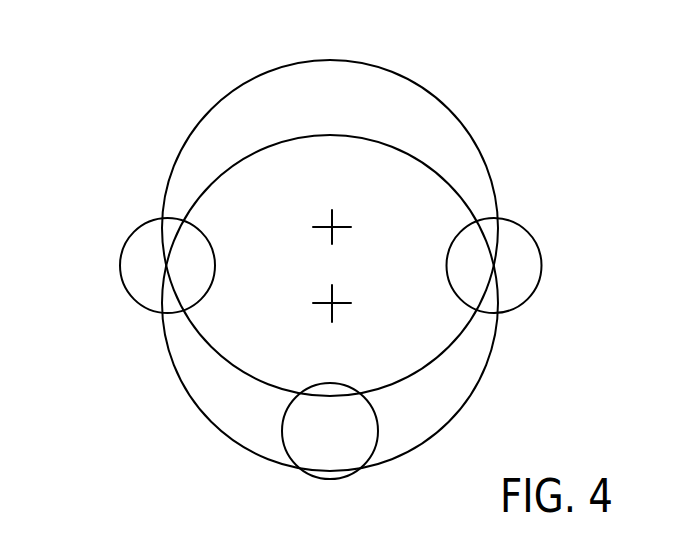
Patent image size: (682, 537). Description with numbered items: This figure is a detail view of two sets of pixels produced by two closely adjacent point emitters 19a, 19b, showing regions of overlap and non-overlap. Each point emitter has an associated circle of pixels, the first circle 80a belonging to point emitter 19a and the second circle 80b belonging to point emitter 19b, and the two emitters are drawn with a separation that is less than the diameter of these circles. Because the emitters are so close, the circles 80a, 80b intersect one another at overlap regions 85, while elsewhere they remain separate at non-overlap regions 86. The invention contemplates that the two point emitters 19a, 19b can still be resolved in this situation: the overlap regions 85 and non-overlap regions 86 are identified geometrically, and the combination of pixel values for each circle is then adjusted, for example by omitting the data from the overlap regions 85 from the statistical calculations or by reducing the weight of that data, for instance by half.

The circle 80a is at (330, 59).
The circle 80b is at (212, 183).
The overlap regions 85 is at (120, 264).
The non-overlap regions 86 is at (330, 479).
The point emitter 19a is at (334, 226).
The point emitter 19b is at (335, 306).